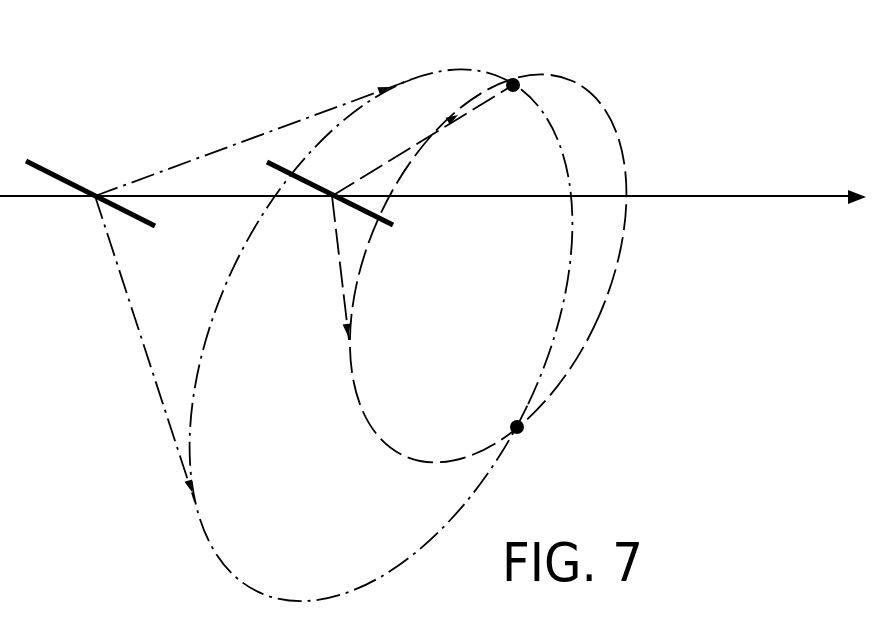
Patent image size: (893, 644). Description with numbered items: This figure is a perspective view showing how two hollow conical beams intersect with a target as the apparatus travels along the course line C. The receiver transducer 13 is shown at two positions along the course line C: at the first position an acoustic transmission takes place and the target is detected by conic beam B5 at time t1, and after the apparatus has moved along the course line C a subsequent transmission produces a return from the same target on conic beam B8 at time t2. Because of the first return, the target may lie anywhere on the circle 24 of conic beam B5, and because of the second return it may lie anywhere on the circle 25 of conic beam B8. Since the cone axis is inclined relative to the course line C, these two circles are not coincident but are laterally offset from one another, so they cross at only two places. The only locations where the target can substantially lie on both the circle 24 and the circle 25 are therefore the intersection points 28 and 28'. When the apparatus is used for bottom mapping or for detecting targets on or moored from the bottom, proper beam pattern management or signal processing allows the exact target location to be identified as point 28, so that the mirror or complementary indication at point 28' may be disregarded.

The receiver transducer 13 is at (53, 174).
The circle of conic beam B5 24 is at (389, 573).
The circle of conic beam B8 25 is at (598, 326).
The intersection point 28 is at (528, 458).
The intersection point 28' is at (523, 49).
The conic beam B5 is at (238, 141).
The conic beam B8 is at (428, 136).
The course line C is at (802, 195).
The time t1 is at (78, 234).
The time t2 is at (305, 232).